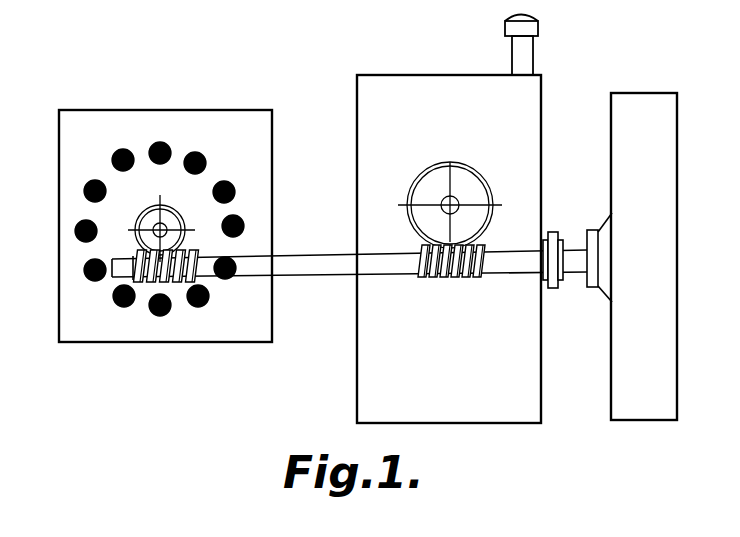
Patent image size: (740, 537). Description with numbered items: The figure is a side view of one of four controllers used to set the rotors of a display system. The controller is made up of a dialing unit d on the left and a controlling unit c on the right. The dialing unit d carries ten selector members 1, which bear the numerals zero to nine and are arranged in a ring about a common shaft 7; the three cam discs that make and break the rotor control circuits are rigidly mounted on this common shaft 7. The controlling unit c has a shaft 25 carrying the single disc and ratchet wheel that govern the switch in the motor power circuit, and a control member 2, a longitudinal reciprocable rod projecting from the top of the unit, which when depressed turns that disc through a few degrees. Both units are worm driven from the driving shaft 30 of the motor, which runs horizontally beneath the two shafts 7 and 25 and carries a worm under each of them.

The selector members 1 is at (121, 160).
The control member 2 is at (520, 53).
The common shaft 7 is at (150, 233).
The shaft 25 is at (453, 200).
The driving shaft 30 is at (316, 264).
The controlling unit c is at (456, 69).
The dialing unit d is at (249, 102).